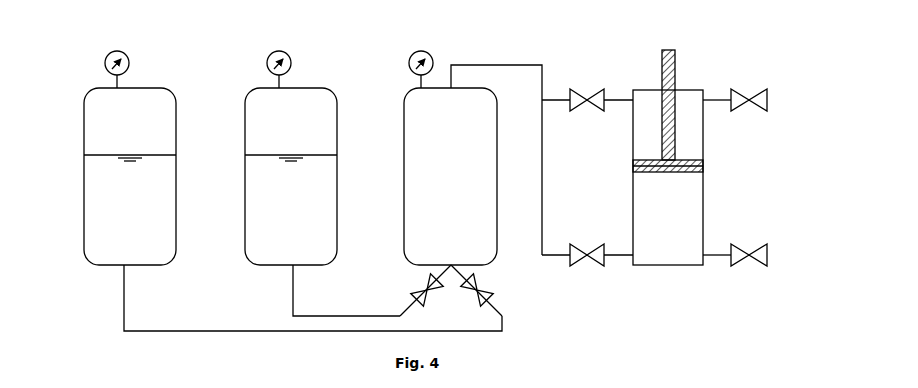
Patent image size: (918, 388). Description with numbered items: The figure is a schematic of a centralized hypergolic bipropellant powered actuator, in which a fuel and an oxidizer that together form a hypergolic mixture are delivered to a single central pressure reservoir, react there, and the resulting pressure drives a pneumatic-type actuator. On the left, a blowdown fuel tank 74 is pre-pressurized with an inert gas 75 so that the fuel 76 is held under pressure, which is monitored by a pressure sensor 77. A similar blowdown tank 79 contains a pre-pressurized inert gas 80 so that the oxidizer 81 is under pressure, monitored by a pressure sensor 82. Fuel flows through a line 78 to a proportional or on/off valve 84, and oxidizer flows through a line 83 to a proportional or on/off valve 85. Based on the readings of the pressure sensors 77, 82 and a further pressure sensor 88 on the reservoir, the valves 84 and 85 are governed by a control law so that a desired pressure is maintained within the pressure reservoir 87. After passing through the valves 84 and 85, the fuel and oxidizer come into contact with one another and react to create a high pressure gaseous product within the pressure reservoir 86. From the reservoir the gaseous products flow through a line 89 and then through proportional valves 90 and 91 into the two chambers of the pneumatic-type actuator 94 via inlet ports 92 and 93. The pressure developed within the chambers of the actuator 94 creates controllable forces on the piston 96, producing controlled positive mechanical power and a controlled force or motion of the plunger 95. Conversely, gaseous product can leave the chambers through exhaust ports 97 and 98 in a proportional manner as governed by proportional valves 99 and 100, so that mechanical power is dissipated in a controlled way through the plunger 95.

The blowdown fuel tank 74 is at (84, 172).
The inert gas 75 is at (103, 121).
The fuel 76 is at (103, 207).
The pressure sensor 77 is at (103, 73).
The line 78 is at (124, 283).
The blowdown tank 79 is at (245, 172).
The inert gas 80 is at (264, 121).
The oxidizer 81 is at (264, 207).
The pressure sensor 82 is at (264, 73).
The line 83 is at (293, 283).
The proportional or on/off valve 84 is at (420, 285).
The proportional or on/off valve 85 is at (483, 285).
The pressure reservoir 86 is at (425, 207).
The pressure reservoir 87 is at (404, 172).
The pressure sensor 88 is at (404, 73).
The line 89 is at (530, 64).
The proportional valve 90 is at (592, 93).
The proportional valve 91 is at (592, 266).
The inlet port 92 is at (630, 106).
The inlet port 93 is at (632, 249).
The pneumatic-type actuator 94 is at (707, 198).
The plunger 95 is at (678, 68).
The piston 96 is at (657, 178).
The exhaust port 97 is at (707, 105).
The exhaust port 98 is at (707, 253).
The proportional valve 99 is at (754, 93).
The proportional valve 100 is at (754, 266).